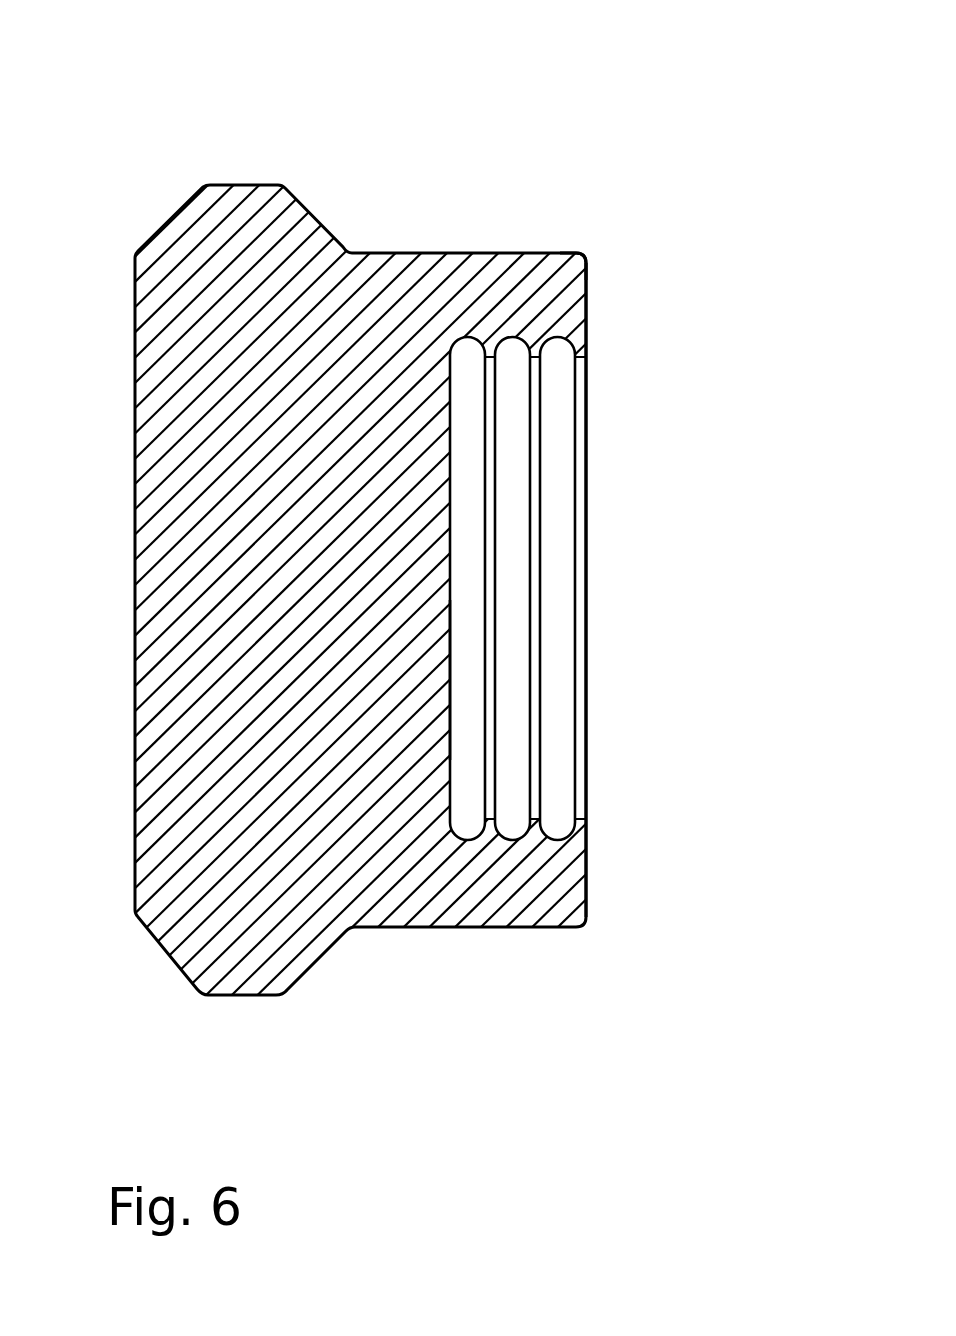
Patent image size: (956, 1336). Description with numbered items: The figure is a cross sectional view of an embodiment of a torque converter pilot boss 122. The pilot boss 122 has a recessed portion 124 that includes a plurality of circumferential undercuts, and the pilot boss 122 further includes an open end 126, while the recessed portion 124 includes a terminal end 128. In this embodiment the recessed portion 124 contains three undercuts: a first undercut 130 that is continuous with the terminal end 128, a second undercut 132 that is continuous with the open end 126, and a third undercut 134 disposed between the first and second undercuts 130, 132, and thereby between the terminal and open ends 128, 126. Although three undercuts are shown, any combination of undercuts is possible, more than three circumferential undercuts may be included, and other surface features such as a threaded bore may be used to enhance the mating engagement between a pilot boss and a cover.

The torque converter pilot boss 122 is at (153, 132).
The recessed portion 124 is at (613, 485).
The open end 126 is at (587, 305).
The terminal end 128 is at (450, 671).
The first undercut 130 is at (467, 802).
The second undercut 132 is at (557, 798).
The third undercut 134 is at (513, 803).